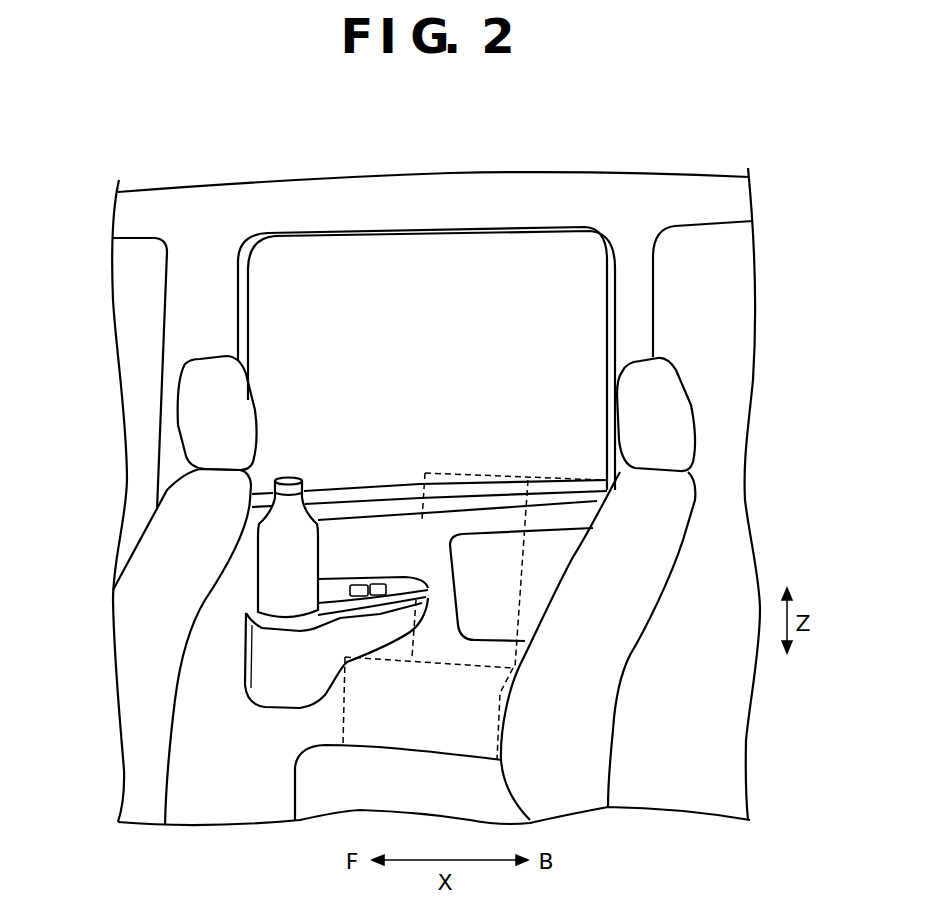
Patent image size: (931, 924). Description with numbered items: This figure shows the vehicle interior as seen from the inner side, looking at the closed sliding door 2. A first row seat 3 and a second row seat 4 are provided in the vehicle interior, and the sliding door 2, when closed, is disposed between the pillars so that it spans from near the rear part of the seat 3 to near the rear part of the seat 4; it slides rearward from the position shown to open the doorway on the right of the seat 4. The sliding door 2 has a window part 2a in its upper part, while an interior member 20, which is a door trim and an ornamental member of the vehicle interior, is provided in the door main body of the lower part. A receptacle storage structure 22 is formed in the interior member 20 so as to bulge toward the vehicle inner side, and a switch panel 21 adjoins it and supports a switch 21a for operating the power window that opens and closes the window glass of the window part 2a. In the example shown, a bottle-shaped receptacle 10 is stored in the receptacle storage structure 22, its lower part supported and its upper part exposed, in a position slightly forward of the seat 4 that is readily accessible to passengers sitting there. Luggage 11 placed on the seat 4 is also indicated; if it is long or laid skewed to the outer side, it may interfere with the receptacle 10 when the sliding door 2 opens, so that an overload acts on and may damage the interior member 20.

The sliding door 2 is at (455, 208).
The window part 2a is at (527, 257).
The first row seat 3 is at (150, 557).
The second row seat 4 is at (613, 702).
The receptacle 10 is at (287, 478).
The luggage 11 is at (438, 470).
The interior member 20 is at (377, 490).
The switch panel 21 is at (398, 577).
The switch 21a is at (358, 580).
The receptacle storage structure 22 is at (268, 728).